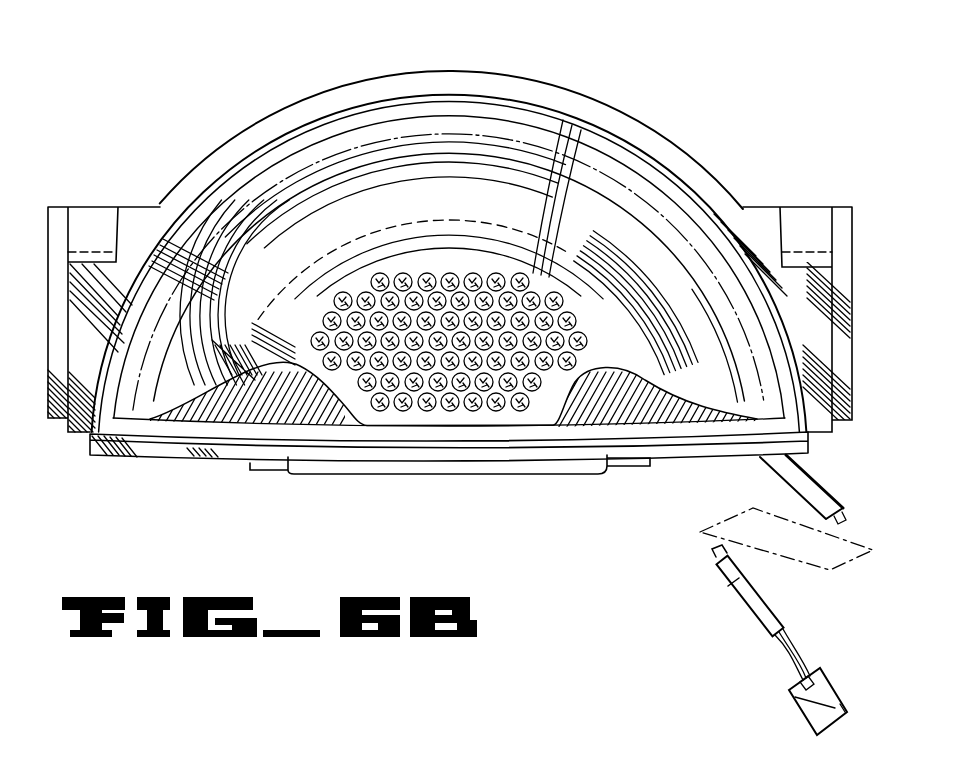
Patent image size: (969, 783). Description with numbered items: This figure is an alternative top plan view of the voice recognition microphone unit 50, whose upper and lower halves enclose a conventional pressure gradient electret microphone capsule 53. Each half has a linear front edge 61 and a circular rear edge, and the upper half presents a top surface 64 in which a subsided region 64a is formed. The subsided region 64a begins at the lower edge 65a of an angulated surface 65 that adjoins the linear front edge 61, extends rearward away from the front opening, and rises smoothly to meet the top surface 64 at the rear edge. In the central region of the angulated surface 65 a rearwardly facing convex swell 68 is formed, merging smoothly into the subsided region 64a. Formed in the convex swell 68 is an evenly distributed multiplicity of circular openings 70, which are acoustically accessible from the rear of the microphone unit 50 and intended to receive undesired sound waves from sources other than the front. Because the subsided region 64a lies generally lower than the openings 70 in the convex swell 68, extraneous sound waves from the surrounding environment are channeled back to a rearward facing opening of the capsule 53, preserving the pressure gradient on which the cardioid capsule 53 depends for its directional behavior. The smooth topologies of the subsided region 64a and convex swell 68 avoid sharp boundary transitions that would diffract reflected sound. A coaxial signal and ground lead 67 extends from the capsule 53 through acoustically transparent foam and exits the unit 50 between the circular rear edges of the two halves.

The microphone unit 50 is at (157, 497).
The microphone capsule 53 is at (426, 411).
The linear front edge 61 is at (232, 452).
The top surface 64 is at (300, 142).
The subsided region 64a is at (420, 200).
The angulated surface 65 is at (600, 393).
The lower edge of angulated surface 65a is at (678, 390).
The coaxial signal and ground lead 67 is at (748, 598).
The convex swell 68 is at (550, 427).
The circular openings 70 is at (519, 273).